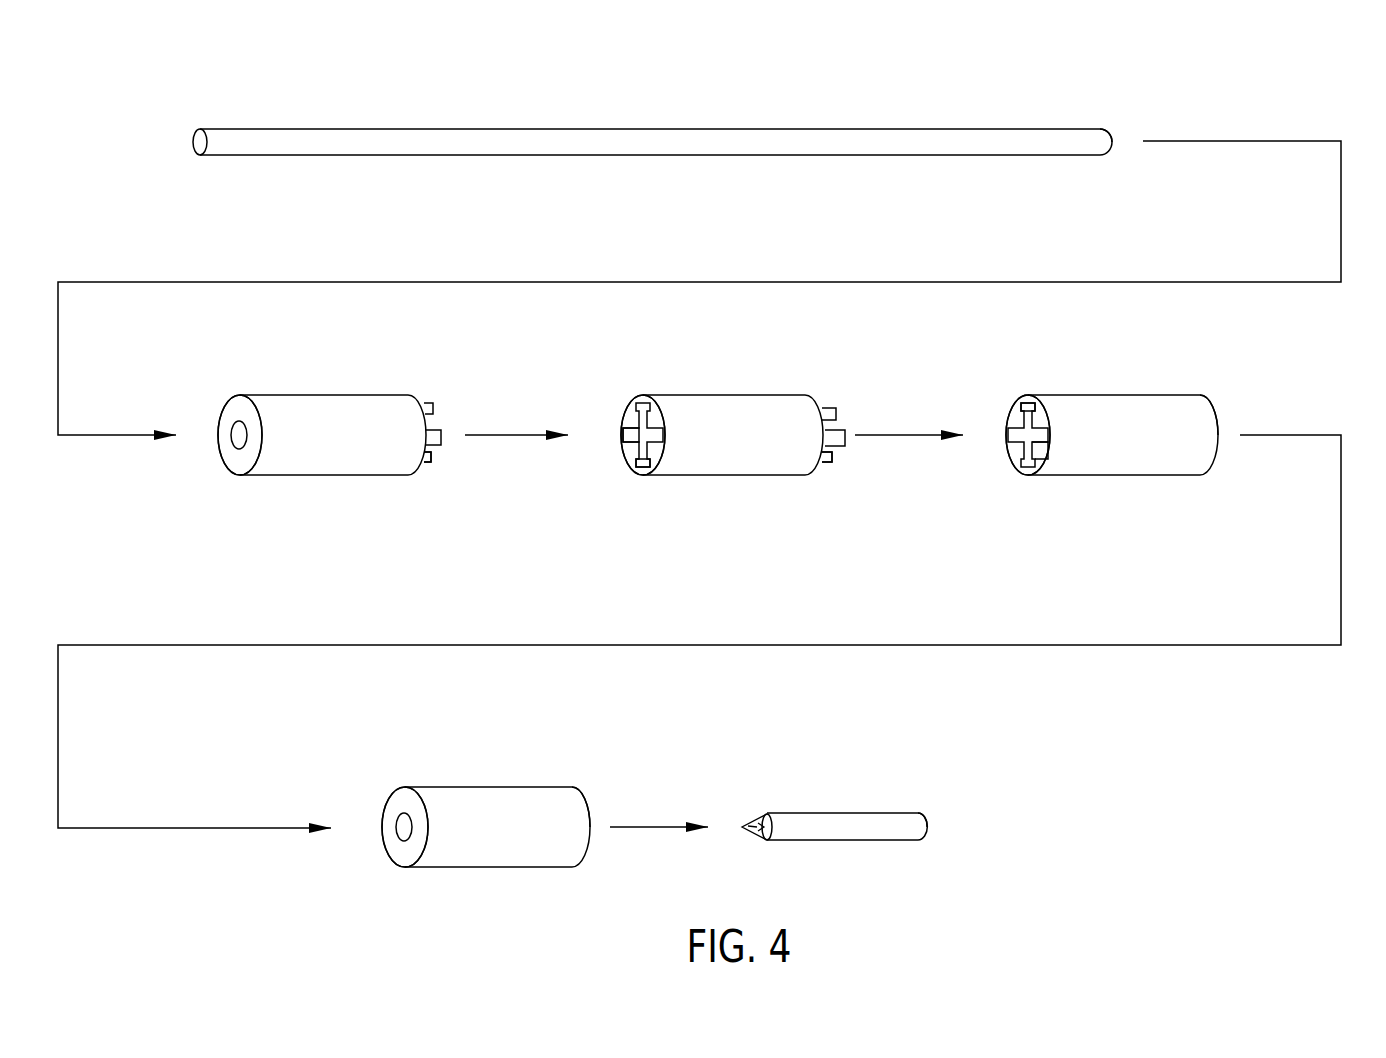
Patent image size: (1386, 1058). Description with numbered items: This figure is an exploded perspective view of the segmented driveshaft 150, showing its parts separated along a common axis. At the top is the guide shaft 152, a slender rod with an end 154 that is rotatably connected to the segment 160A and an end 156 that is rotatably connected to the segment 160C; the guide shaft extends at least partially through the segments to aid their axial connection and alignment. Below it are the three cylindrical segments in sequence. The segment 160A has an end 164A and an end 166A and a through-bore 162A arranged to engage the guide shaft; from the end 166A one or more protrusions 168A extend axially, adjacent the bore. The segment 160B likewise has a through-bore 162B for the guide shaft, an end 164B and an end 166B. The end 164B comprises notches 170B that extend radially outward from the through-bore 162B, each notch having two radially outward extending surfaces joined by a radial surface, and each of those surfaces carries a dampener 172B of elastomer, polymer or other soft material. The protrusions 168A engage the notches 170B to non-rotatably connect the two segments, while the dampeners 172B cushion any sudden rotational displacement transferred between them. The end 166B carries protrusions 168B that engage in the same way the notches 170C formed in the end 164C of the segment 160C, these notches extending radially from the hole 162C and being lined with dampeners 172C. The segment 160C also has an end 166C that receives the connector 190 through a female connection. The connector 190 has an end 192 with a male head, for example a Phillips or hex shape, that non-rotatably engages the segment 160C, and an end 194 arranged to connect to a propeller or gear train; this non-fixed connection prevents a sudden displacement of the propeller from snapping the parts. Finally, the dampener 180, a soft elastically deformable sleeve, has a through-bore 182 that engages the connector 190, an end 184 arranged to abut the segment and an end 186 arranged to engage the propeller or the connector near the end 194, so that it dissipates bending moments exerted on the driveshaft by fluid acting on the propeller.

The segmented driveshaft 150 is at (1300, 118).
The guide shaft 152 is at (661, 140).
The end of guide shaft 154 is at (202, 134).
The end of guide shaft 156 is at (1112, 140).
The segment 160A is at (292, 462).
The through-bore 162A is at (240, 437).
The end of segment 164A is at (232, 412).
The end of segment 166A is at (435, 427).
The protrusions 168A is at (432, 458).
The segment 160B is at (795, 465).
The through-bore 162B is at (632, 452).
The end of segment 164B is at (632, 415).
The end of segment 166B is at (838, 428).
The protrusions 168B is at (838, 458).
The notches 170B is at (645, 462).
The dampeners 172B is at (633, 452).
The segment 160C is at (1185, 465).
The hole 162C is at (1026, 446).
The end of segment 164C is at (1015, 420).
The end of segment 166C is at (1215, 430).
The notches 170C is at (1035, 400).
The dampeners 172C is at (1040, 452).
The dampener 180 is at (528, 850).
The through-bore 182 is at (404, 835).
The end of dampener 184 is at (397, 804).
The end of dampener 186 is at (592, 815).
The connector 190 is at (842, 832).
The end of connector 192 is at (762, 817).
The end of connector 194 is at (927, 825).